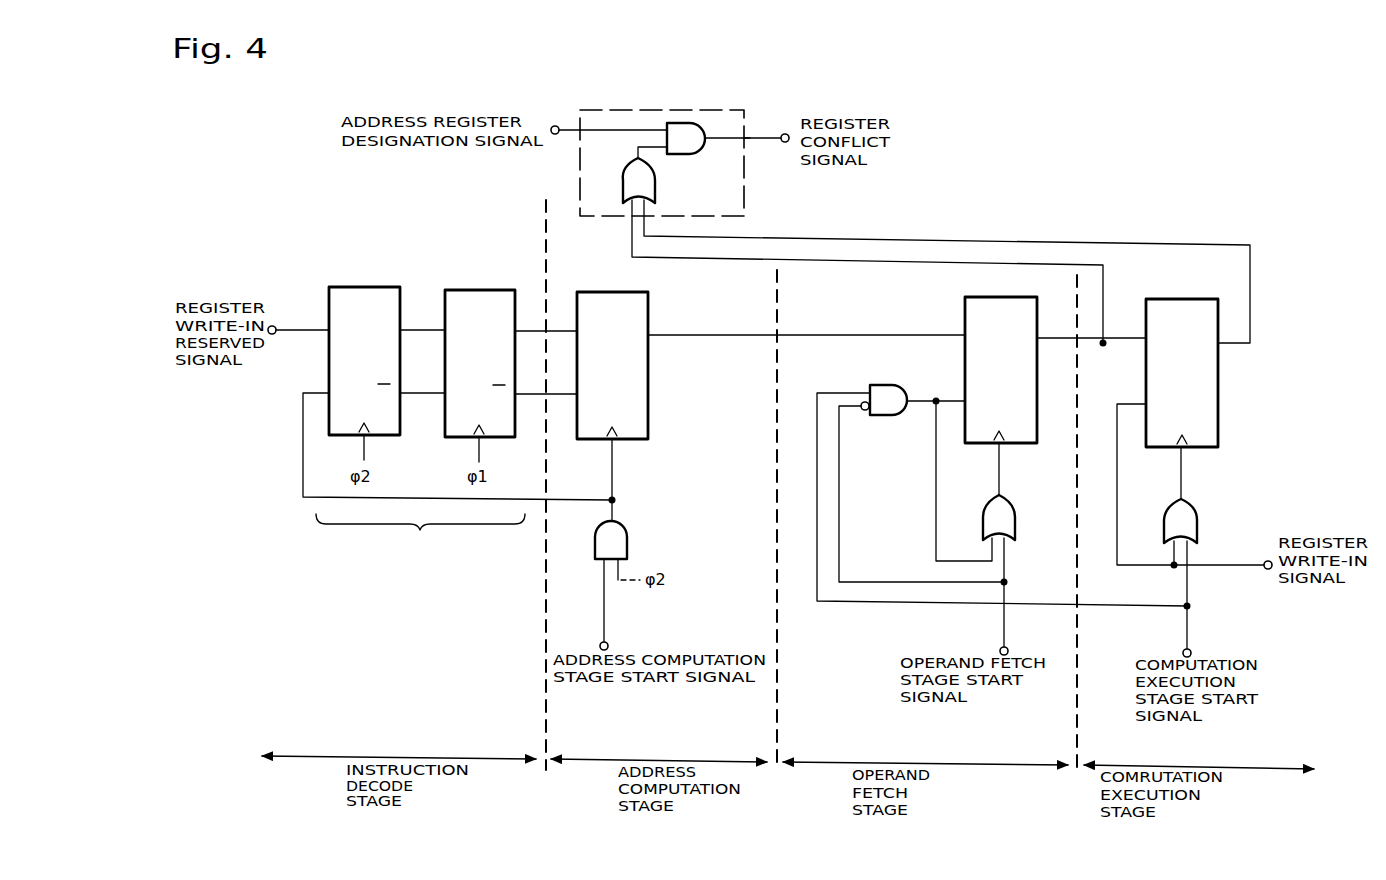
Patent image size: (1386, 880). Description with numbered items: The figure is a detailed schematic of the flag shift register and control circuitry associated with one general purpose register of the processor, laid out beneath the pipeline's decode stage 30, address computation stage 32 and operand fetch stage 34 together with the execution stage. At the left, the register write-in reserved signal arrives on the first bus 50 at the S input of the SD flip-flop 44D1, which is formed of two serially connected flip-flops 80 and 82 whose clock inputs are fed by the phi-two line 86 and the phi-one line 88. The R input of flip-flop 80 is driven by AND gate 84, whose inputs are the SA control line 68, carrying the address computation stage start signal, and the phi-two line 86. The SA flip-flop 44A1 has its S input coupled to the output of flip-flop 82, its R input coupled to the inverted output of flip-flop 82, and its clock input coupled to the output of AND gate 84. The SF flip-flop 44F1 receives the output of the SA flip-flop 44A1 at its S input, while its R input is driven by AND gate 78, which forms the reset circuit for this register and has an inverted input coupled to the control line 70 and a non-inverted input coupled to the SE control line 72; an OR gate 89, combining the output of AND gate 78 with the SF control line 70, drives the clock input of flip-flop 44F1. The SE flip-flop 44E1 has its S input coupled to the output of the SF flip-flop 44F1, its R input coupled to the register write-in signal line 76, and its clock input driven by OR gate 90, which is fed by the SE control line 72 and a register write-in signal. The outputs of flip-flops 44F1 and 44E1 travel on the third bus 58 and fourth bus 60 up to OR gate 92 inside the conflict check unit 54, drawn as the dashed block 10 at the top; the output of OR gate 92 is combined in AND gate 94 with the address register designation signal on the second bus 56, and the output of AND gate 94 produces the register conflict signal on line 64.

The register conflict detecting circuit 10 is at (608, 96).
The second bus 56 is at (631, 129).
The AND gate 94 is at (685, 122).
The conflict check unit 54 is at (745, 122).
The register conflict signal line 64 is at (758, 141).
The OR gate 92 is at (655, 195).
The fourth bus 60 is at (1250, 303).
The third bus 58 is at (867, 260).
The first bus 50 is at (308, 330).
The flip-flop 80 is at (360, 287).
The flip-flop 82 is at (470, 290).
The phi2 line 86 is at (364, 453).
The phi1 line 88 is at (479, 455).
The SD flip-flop 44D1 is at (420, 539).
The SA flip-flop 44A1 is at (648, 417).
The AND gate 84 is at (627, 532).
The SA control line 68 is at (604, 600).
The SF flip-flop 44F1 is at (965, 313).
The AND gate 78 is at (890, 385).
The OR gate 89 is at (1014, 509).
The SF control line 70 is at (1003, 622).
The SE flip-flop 44E1 is at (1218, 398).
The OR gate 90 is at (1197, 512).
The register write-in signal bus 76 is at (1225, 563).
The SE control line 72 is at (1187, 633).
The decode stage 30 is at (400, 751).
The address computation stage 32 is at (660, 751).
The operand fetch stage 34 is at (925, 754).